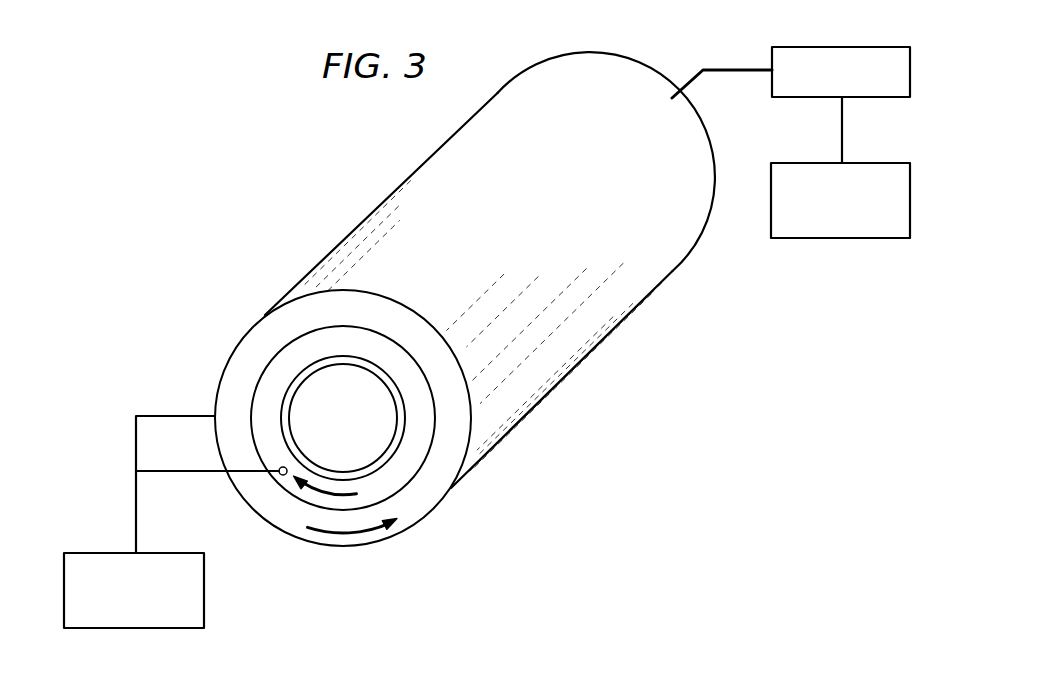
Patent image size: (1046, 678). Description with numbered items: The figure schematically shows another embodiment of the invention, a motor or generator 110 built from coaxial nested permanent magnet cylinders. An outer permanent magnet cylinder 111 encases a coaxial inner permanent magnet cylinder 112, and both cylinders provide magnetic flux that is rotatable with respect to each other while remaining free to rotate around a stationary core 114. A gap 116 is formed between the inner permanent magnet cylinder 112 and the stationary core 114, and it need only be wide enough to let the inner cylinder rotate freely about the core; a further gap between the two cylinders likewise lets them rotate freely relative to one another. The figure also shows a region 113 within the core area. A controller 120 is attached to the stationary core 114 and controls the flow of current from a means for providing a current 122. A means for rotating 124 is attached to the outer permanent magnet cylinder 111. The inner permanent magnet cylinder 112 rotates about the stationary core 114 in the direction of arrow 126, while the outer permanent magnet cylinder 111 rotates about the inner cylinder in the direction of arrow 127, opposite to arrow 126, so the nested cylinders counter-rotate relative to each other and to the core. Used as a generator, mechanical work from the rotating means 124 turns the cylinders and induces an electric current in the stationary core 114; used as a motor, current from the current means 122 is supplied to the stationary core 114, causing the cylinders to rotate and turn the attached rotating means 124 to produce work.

The motor or generator 110 is at (359, 178).
The outer permanent magnet cylinder 111 is at (322, 312).
The inner permanent magnet cylinder 112 is at (272, 392).
The core 113 is at (372, 440).
The stationary core 114 is at (305, 442).
The gap 116 is at (393, 385).
The controller 120 is at (843, 47).
The means for providing a current 122 is at (842, 238).
The means for rotating 124 is at (204, 583).
The arrow 126 is at (315, 492).
The arrow 127 is at (338, 532).